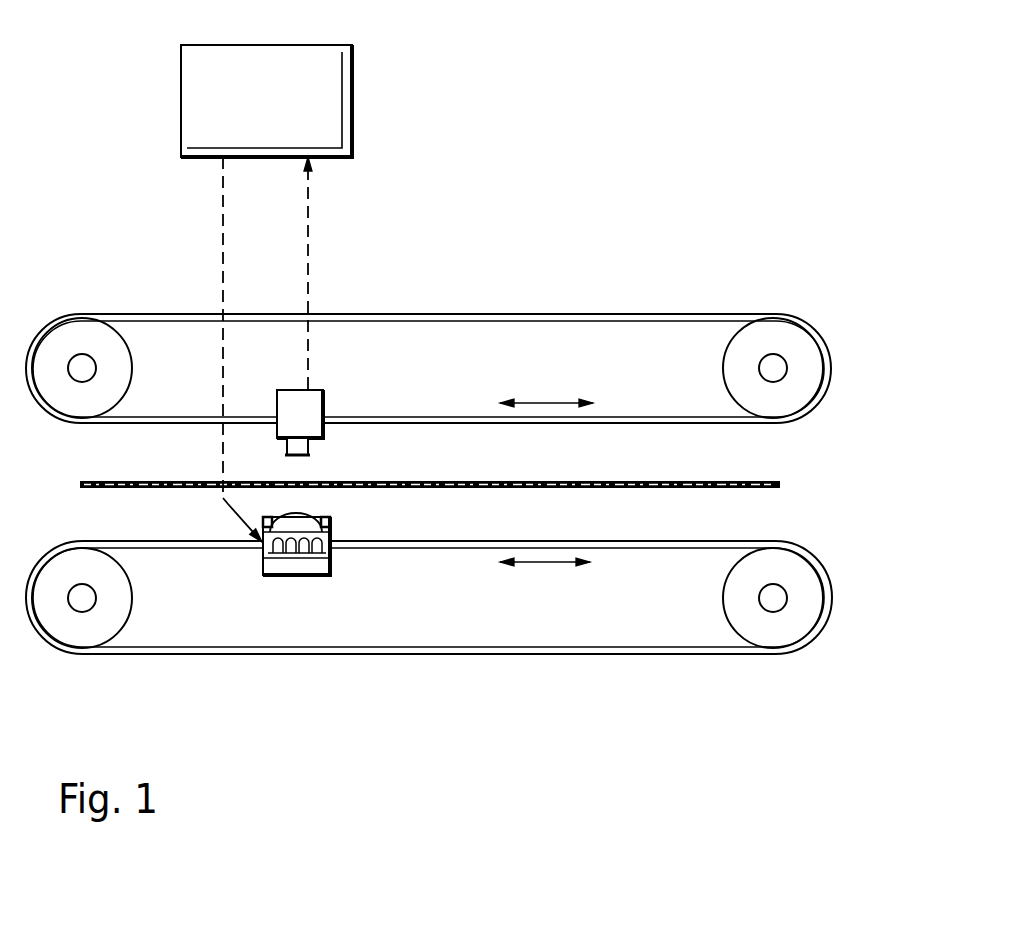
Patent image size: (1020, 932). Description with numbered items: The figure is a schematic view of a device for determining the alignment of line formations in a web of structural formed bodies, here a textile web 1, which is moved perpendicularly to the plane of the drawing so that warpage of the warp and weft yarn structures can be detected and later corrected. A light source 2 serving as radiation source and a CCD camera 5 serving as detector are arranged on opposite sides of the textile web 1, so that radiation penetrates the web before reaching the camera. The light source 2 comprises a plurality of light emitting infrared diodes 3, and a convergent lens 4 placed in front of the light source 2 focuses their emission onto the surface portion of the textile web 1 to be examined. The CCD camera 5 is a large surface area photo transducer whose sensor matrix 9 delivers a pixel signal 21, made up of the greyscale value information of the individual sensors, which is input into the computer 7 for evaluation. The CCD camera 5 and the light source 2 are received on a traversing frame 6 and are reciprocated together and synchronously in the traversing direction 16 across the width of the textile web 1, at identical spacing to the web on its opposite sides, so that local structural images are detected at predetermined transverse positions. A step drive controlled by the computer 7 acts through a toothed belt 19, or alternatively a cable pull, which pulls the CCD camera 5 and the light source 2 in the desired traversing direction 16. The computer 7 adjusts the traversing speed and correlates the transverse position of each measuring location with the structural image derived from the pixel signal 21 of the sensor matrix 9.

The textile web 1 is at (656, 481).
The light source 2 is at (310, 577).
The infrared diodes 3 is at (262, 548).
The convergent lens 4 is at (308, 518).
The CCD camera 5 is at (315, 408).
The traversing frame 6 is at (818, 418).
The computer 7 is at (330, 90).
The sensor matrix 9 is at (287, 391).
The traversing direction 16 is at (548, 403).
The toothed belt 19 is at (663, 314).
The pixel signal 21 is at (308, 190).